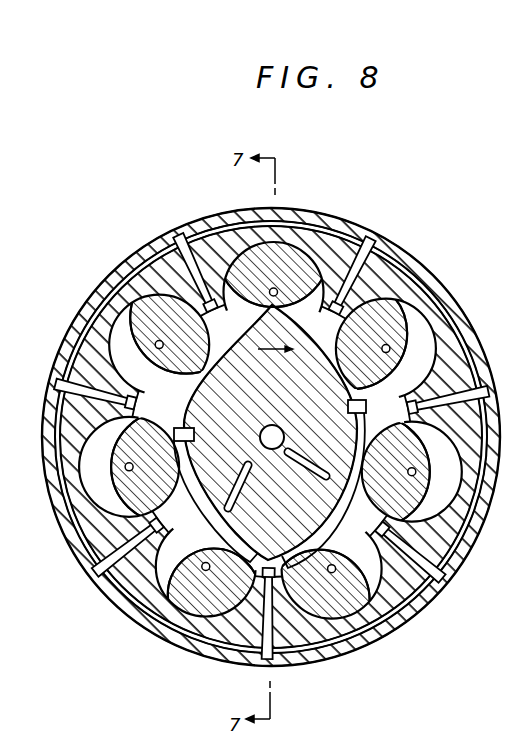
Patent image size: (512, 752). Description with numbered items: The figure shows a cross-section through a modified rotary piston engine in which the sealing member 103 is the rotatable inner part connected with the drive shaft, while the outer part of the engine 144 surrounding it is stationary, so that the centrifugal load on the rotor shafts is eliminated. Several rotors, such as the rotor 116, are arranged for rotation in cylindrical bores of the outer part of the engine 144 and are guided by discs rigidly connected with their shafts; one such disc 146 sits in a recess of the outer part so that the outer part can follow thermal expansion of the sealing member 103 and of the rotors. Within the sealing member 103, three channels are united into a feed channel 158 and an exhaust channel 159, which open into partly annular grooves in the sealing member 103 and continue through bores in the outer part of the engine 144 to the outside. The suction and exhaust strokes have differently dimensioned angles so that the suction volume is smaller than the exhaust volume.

The sealing member 103 is at (313, 393).
The rotor 116 is at (292, 253).
The outer part of the engine 144 is at (140, 282).
The disc 146 is at (312, 300).
The feed channel 158 is at (322, 480).
The exhaust channel 159 is at (232, 487).